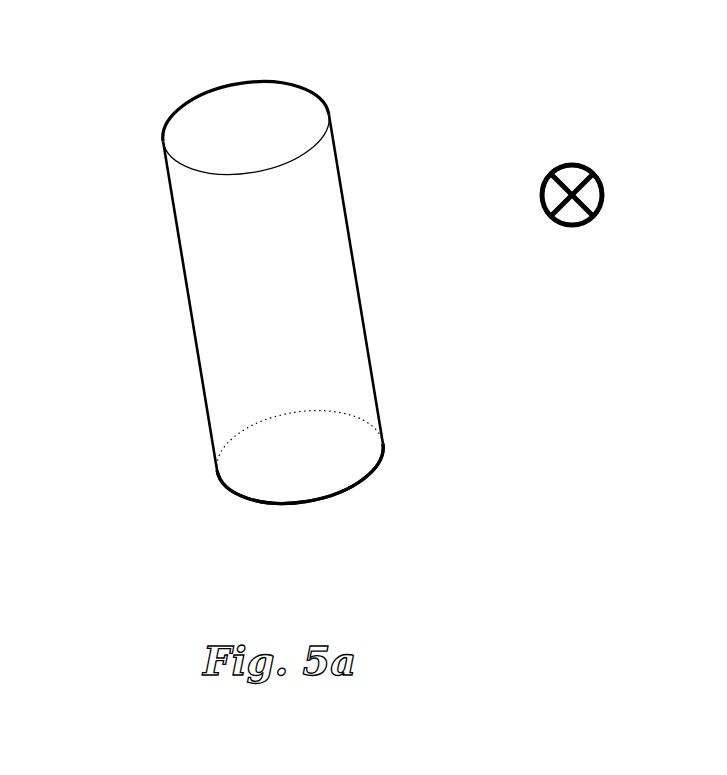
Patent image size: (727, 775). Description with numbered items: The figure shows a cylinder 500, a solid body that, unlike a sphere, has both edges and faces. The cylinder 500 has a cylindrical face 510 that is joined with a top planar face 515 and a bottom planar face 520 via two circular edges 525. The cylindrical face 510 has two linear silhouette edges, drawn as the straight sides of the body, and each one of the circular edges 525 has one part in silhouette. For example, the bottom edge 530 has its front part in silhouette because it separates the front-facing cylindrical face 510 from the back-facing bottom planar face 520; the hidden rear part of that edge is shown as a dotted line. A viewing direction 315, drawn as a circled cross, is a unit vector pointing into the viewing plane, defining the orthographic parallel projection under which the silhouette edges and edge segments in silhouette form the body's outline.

The cylinder 500 is at (260, 287).
The cylindrical face 510 is at (241, 347).
The top planar face 515 is at (226, 118).
The bottom planar face 520 is at (274, 472).
The circular edges 525 is at (260, 72).
The bottom edge 530 is at (332, 510).
The viewing direction 315 is at (524, 195).